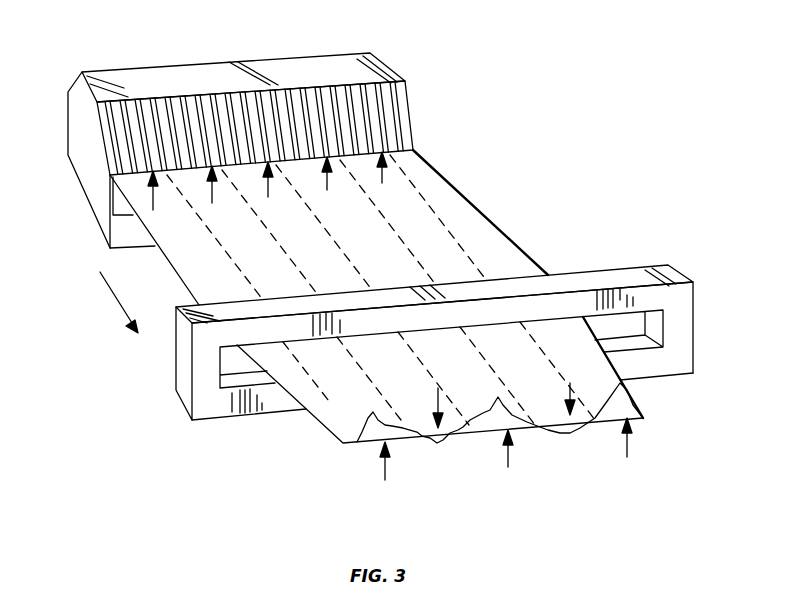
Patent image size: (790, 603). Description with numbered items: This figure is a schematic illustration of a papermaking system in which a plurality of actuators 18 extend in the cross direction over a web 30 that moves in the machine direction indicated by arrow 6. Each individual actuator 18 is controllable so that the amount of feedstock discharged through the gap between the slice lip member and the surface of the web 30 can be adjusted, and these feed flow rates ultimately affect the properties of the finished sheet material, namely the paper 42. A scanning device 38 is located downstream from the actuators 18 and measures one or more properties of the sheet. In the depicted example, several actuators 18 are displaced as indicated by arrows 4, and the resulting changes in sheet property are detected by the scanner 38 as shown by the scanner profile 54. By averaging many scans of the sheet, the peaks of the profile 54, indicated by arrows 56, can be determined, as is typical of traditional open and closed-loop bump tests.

The arrows indicating actuator displacement 4 is at (397, 206).
The arrow indicating machine direction 6 is at (110, 295).
The actuator 18 is at (388, 118).
The web 30 is at (458, 190).
The scanning device 38 is at (588, 278).
The paper 42 is at (330, 410).
The scanner profile 54 is at (644, 378).
The arrows indicating profile peaks 56 is at (628, 454).